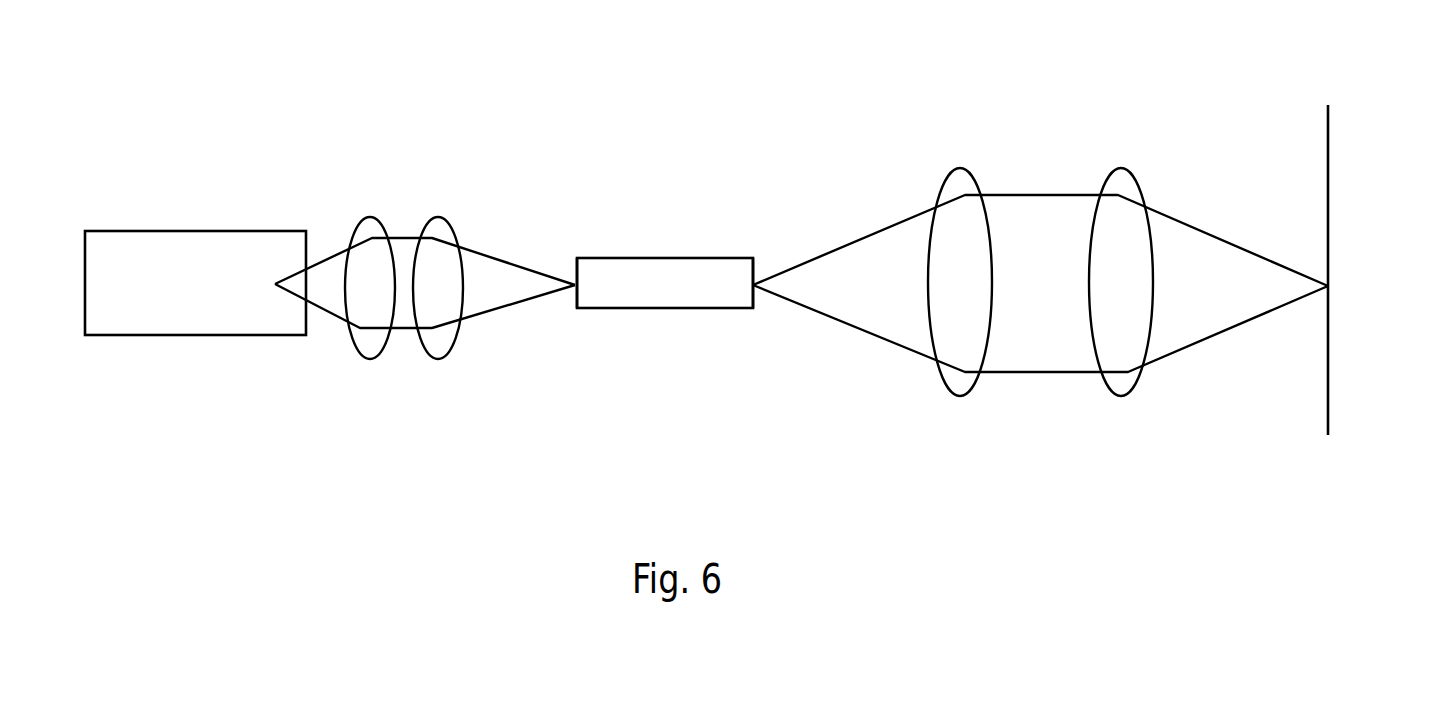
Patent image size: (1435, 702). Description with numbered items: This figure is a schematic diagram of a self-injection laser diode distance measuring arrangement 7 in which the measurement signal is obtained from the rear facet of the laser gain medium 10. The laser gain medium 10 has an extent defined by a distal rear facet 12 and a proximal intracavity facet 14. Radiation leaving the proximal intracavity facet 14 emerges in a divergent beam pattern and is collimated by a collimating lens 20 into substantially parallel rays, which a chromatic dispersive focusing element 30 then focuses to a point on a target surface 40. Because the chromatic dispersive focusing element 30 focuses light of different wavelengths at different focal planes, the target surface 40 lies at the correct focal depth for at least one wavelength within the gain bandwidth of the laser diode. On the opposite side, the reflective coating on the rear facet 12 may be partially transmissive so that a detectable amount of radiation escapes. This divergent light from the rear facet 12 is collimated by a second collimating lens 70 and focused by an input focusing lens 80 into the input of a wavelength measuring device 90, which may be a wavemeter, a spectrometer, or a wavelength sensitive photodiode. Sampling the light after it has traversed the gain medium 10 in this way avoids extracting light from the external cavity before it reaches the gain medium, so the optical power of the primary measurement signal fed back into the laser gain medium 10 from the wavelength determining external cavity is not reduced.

The optical system 7 is at (1211, 84).
The laser gain medium 10 is at (638, 258).
The rear facet 12 is at (573, 278).
The proximal intracavity facet 14 is at (753, 262).
The collimating lens 20 is at (943, 185).
The chromatic dispersive focusing element 30 is at (1102, 187).
The target surface 40 is at (1330, 185).
The collimating lens 70 is at (440, 225).
The input focusing lens 80 is at (365, 228).
The wavelength measuring device 90 is at (210, 315).